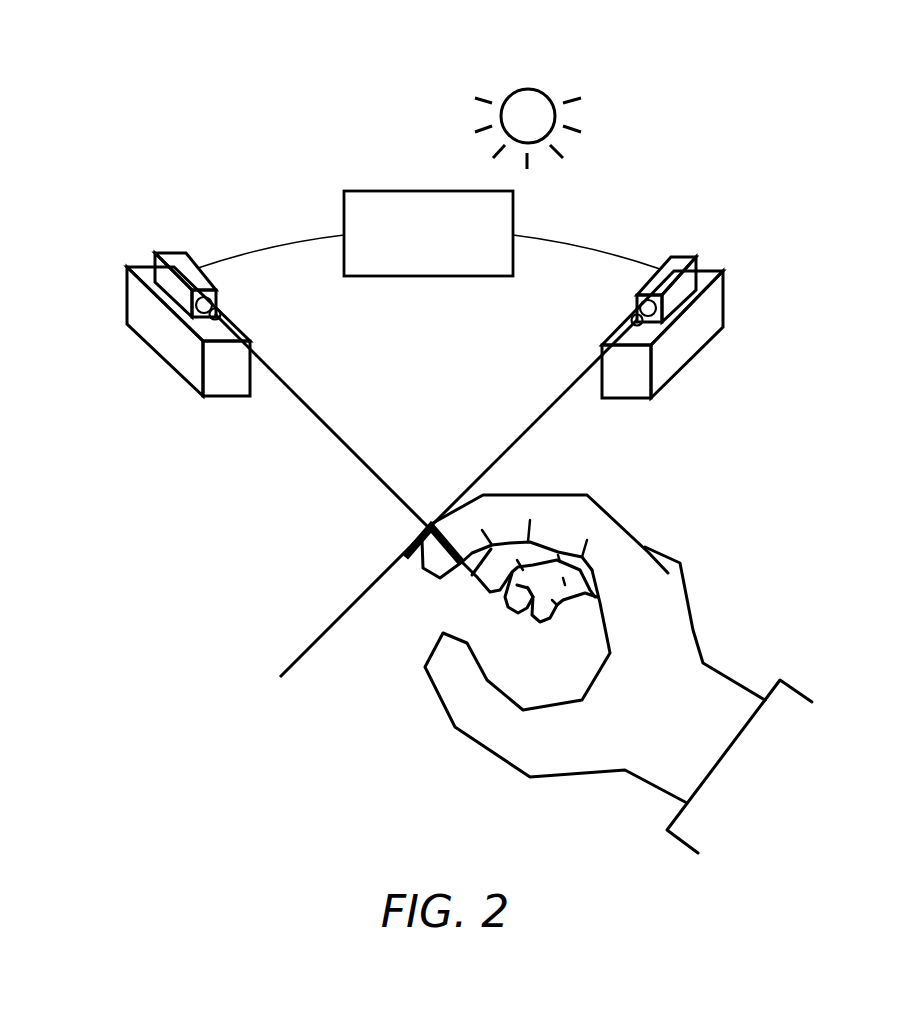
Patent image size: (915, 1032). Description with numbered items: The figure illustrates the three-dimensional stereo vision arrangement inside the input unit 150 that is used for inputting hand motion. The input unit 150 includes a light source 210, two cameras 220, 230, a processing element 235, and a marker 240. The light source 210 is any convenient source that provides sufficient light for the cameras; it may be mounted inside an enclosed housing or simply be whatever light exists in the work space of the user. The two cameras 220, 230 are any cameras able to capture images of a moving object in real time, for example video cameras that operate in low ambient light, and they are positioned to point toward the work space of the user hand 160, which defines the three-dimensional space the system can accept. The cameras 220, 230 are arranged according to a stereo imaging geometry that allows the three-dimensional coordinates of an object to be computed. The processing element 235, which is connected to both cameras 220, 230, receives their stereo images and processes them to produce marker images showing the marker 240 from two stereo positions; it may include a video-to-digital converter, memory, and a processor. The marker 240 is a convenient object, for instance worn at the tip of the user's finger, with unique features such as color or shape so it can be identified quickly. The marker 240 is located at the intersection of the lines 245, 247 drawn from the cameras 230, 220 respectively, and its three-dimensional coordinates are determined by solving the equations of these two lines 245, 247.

The input unit 150 is at (816, 120).
The user hand 160 is at (683, 662).
The light source 210 is at (527, 97).
The camera 220 is at (175, 260).
The camera 230 is at (682, 260).
The processing element 235 is at (391, 198).
The marker 240 is at (405, 552).
The line 245 is at (537, 422).
The line 247 is at (327, 423).